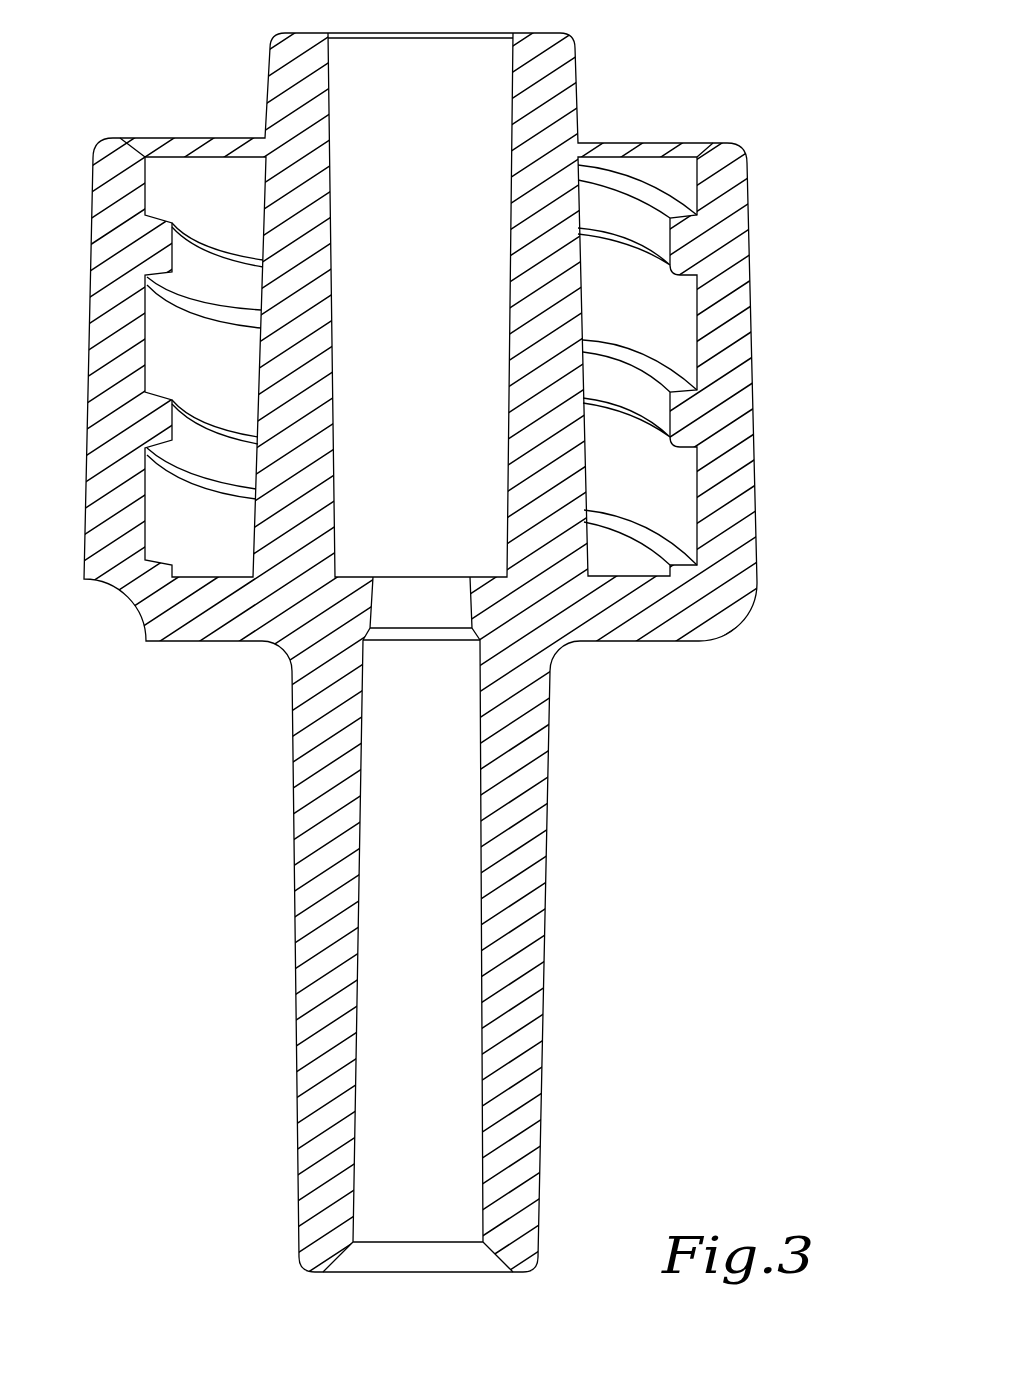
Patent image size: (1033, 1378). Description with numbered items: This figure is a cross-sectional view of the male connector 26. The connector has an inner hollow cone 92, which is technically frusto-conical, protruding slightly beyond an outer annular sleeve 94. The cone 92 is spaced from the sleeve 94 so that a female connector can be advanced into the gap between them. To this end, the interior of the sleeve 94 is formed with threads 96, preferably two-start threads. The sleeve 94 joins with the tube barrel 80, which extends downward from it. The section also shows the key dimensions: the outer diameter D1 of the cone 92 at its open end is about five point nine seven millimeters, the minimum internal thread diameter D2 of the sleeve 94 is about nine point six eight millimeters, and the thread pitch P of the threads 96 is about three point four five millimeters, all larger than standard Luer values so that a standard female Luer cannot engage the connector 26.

The connector 26 is at (160, 822).
The tube barrel 80 is at (525, 1010).
The inner hollow cone 92 is at (535, 147).
The outer annular sleeve 94 is at (748, 185).
The threads 96 is at (660, 370).
The outer diameter D1 is at (193, 48).
The minimum internal thread diameter D2 is at (700, 418).
The thread pitch P is at (217, 449).